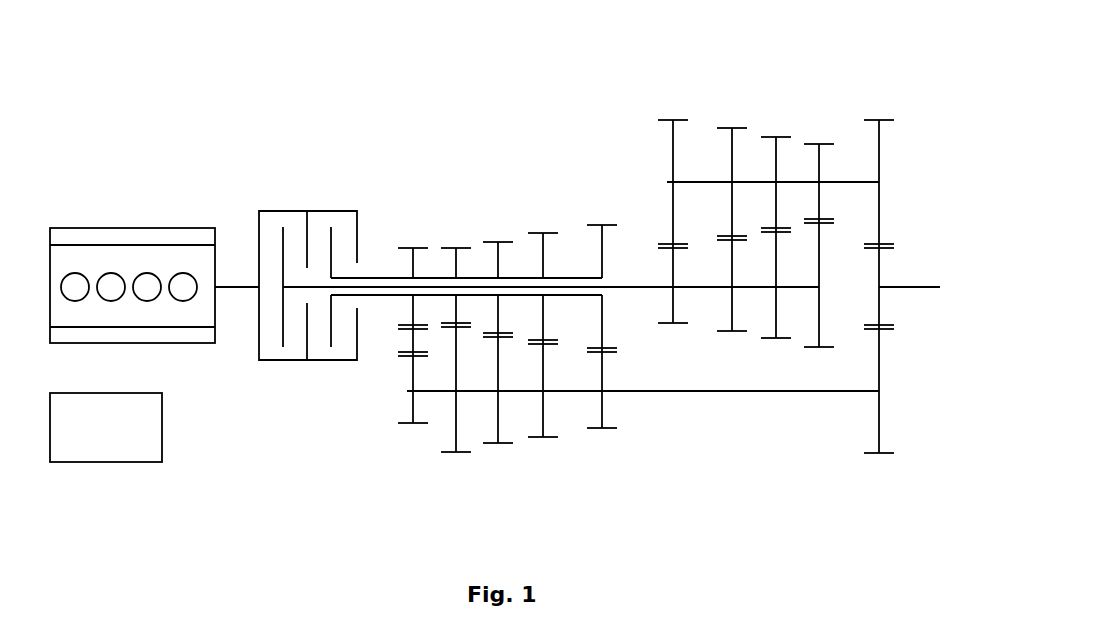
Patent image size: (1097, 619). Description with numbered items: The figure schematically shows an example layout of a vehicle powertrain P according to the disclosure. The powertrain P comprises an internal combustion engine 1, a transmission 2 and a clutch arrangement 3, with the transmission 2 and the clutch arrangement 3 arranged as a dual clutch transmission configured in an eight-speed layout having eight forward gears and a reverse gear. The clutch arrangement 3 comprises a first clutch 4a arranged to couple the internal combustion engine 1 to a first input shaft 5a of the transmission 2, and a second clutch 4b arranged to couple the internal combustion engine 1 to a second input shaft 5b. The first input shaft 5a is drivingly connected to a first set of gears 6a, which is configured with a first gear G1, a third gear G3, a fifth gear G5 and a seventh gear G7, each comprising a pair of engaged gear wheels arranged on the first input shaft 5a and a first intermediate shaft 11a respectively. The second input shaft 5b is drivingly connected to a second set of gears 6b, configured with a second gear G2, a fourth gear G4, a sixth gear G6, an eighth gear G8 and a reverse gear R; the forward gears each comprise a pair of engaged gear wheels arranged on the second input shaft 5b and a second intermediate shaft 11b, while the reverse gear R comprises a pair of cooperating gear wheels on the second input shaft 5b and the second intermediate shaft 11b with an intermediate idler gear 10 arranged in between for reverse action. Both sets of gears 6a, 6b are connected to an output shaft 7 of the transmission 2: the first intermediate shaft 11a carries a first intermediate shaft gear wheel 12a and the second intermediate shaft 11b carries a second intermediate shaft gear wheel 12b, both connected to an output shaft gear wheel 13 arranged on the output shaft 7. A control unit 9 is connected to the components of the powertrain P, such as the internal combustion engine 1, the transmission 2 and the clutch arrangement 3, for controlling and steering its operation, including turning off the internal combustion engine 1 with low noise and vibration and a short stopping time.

The internal combustion engine 1 is at (127, 228).
The transmission 2 is at (908, 83).
The clutch arrangement 3 is at (292, 193).
The first clutch 4a is at (282, 318).
The second clutch 4b is at (332, 320).
The first input shaft 5a is at (638, 284).
The second input shaft 5b is at (377, 277).
The first set of gears 6a is at (741, 70).
The second set of gears 6b is at (567, 480).
The output shaft 7 is at (912, 287).
The control unit 9 is at (102, 462).
The intermediate idler gear 10 is at (408, 343).
The first intermediate shaft 11a is at (848, 180).
The second intermediate shaft 11b is at (712, 393).
The first intermediate shaft gear wheel 12a is at (880, 150).
The second intermediate shaft gear wheel 12b is at (881, 360).
The output shaft gear wheel 13 is at (882, 303).
The vehicle powertrain P is at (220, 80).
The reverse gear R is at (413, 323).
The first gear G1 is at (673, 208).
The second gear G2 is at (455, 337).
The third gear G3 is at (731, 215).
The fourth gear G4 is at (497, 330).
The fifth gear G5 is at (775, 224).
The sixth gear G6 is at (542, 322).
The seventh gear G7 is at (818, 232).
The eighth gear G8 is at (601, 313).